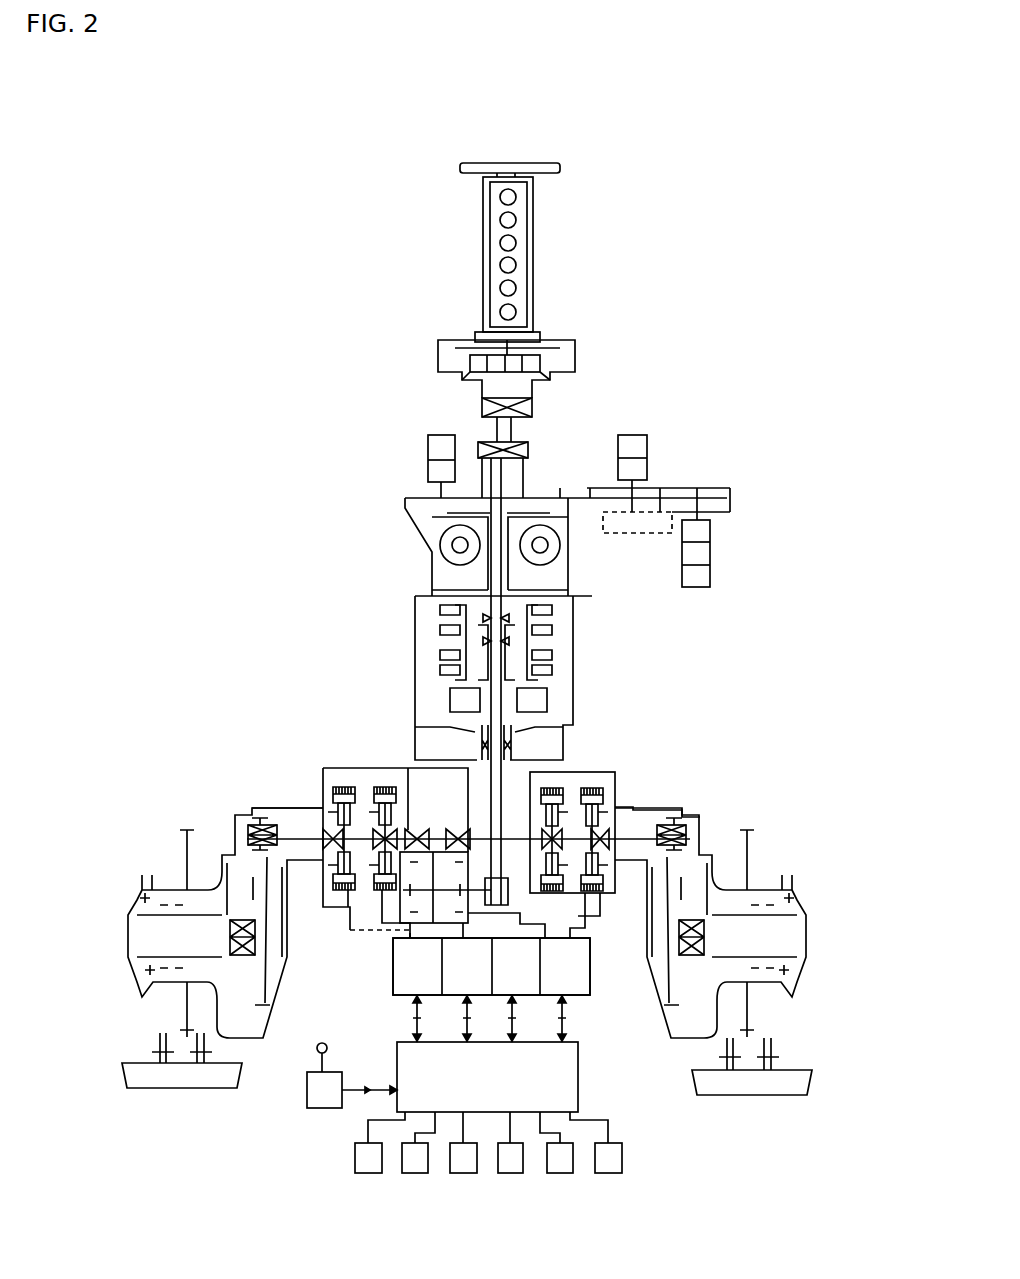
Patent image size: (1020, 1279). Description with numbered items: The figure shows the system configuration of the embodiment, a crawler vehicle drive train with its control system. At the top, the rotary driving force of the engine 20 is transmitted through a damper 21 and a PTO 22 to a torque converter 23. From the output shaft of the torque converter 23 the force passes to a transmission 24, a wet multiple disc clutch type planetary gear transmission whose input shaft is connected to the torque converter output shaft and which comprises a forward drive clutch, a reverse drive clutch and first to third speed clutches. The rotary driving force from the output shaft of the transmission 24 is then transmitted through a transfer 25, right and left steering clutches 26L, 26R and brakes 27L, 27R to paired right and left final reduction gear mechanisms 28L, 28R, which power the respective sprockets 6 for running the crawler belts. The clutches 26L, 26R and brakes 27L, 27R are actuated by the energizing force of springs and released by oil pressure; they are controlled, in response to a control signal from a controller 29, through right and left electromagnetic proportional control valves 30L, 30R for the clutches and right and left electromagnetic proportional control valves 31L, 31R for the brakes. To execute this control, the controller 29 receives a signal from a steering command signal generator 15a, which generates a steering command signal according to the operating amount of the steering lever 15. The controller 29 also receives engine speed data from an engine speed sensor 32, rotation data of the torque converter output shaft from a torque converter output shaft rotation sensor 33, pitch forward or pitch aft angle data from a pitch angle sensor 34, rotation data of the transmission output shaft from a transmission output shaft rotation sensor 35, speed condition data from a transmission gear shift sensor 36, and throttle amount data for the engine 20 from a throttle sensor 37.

The engine 20 is at (483, 258).
The damper 21 is at (438, 352).
The PTO 22 is at (730, 497).
The torque converter 23 is at (440, 533).
The transmission 24 is at (431, 663).
The transfer 25 is at (496, 905).
The left steering clutch 26L is at (377, 787).
The right steering clutch 26R is at (557, 792).
The left brake 27L is at (342, 787).
The right brake 27R is at (600, 788).
The left final reduction gear mechanism 28L is at (227, 868).
The right final reduction gear mechanism 28R is at (707, 868).
The controller 29 is at (578, 1080).
The left electromagnetic proportional control valve for the clutch 30L is at (450, 998).
The right electromagnetic proportional control valve for the clutch 30R is at (528, 995).
The left electromagnetic proportional control valve for the brake 31L is at (393, 960).
The right electromagnetic proportional control valve for the brake 31R is at (590, 970).
The engine speed sensor 32 is at (372, 1173).
The torque converter output shaft rotation sensor 33 is at (415, 1173).
The pitch angle sensor 34 is at (463, 1173).
The transmission output shaft rotation sensor 35 is at (505, 1173).
The transmission gear shift sensor 36 is at (555, 1173).
The throttle sensor 37 is at (608, 1173).
The steering lever 15 is at (317, 1050).
The steering command signal generator 15a is at (307, 1095).
The sprocket 6 is at (172, 1043).